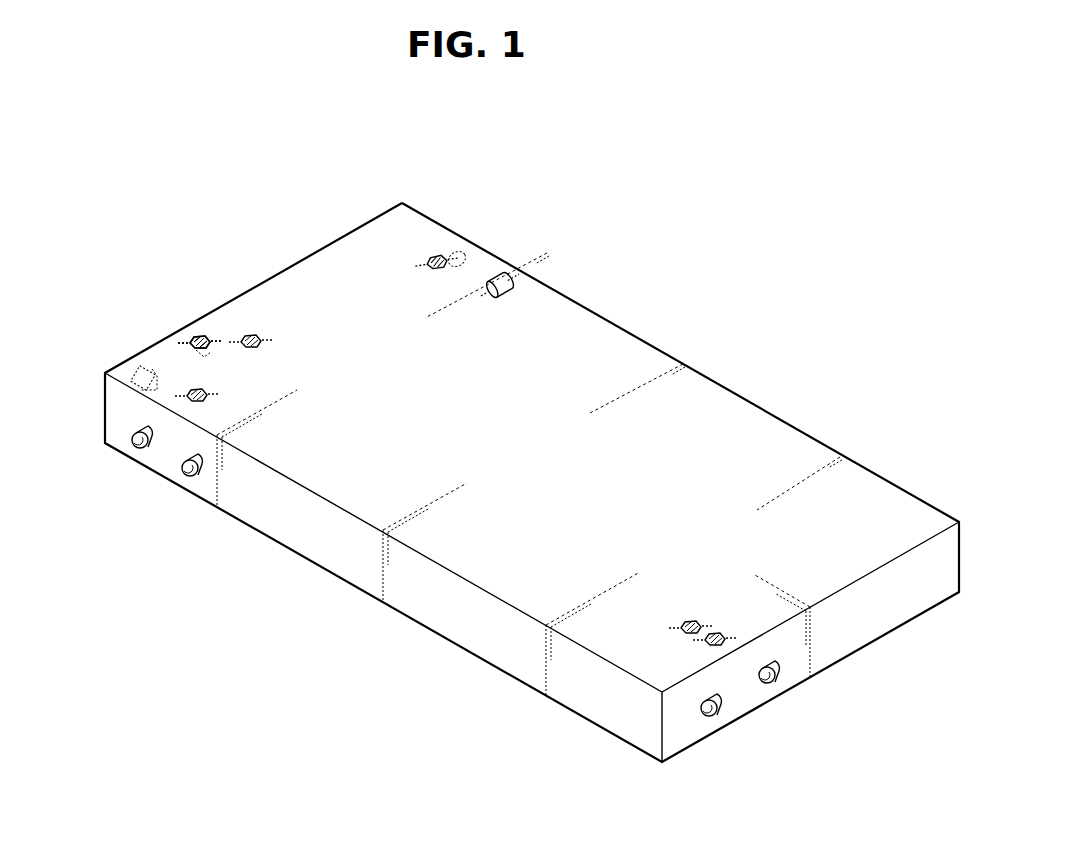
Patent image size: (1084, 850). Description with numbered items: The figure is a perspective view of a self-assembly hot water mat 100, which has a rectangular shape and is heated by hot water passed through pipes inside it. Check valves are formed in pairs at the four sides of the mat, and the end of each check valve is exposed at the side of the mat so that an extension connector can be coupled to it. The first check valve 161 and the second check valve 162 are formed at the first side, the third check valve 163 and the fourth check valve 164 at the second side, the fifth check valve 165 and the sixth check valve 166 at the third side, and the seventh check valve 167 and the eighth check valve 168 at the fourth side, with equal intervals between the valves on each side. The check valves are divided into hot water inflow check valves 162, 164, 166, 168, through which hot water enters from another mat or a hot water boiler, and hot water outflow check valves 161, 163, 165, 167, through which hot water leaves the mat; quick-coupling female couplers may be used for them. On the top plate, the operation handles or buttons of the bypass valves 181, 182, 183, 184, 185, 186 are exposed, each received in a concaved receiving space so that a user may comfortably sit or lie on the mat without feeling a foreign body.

The self-assembly hot water mat 100 is at (760, 281).
The first check valve 161 is at (719, 716).
The second check valve 162 is at (778, 683).
The third check valve 163 is at (508, 284).
The fourth check valve 164 is at (461, 248).
The fifth check valve 165 is at (210, 350).
The sixth check valve 166 is at (140, 371).
The seventh check valve 167 is at (133, 444).
The eighth check valve 168 is at (185, 478).
The bypass valve 181 is at (688, 638).
The bypass valve 182 is at (429, 254).
The bypass valve 183 is at (189, 390).
The bypass valve 184 is at (196, 336).
The bypass valve 185 is at (716, 647).
The bypass valve 186 is at (251, 335).